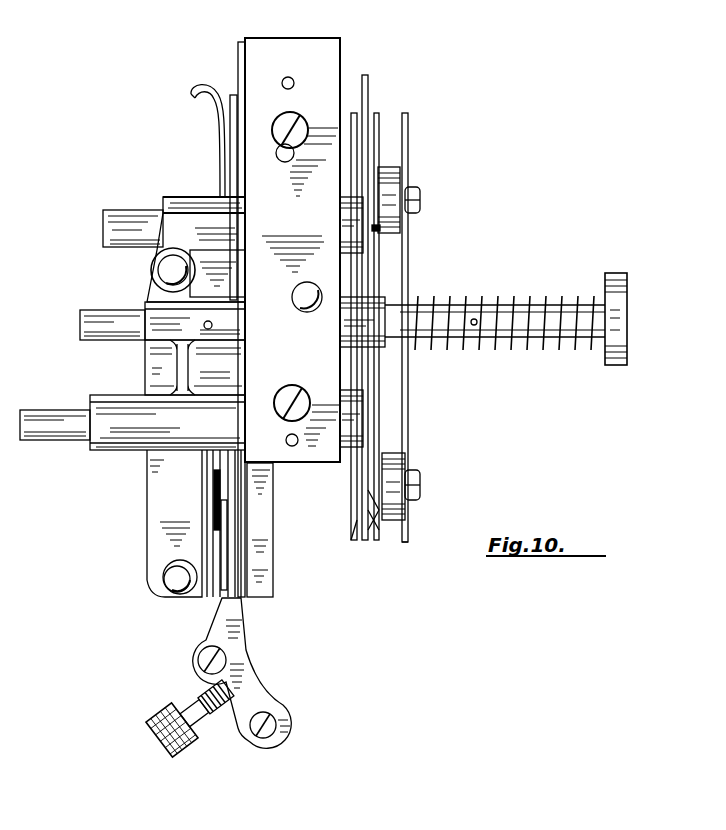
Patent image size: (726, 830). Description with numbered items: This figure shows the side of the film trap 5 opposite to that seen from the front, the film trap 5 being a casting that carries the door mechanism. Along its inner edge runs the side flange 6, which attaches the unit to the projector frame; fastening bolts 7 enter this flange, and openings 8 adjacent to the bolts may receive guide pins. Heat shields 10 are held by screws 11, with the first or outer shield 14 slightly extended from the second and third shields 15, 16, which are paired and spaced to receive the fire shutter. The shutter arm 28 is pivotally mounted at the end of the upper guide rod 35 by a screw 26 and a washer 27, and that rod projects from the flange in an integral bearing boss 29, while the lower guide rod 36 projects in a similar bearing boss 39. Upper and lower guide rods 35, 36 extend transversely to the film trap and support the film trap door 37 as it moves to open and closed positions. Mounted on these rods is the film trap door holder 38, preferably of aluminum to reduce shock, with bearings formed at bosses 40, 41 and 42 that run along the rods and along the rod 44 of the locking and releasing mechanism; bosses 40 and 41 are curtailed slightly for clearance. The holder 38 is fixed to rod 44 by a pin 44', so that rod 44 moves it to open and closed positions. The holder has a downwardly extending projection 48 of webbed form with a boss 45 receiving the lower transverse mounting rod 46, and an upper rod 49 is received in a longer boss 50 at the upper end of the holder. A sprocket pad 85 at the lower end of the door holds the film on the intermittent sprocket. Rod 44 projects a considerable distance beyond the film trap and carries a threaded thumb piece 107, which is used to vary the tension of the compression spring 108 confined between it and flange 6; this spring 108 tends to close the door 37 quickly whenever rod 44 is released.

The film trap 5 is at (250, 40).
The side flange 6 is at (322, 42).
The fastening bolts 7 is at (301, 126).
The openings 8 is at (296, 447).
The heat shields 10 is at (410, 147).
The screws 11 is at (420, 200).
The first or outer shield 14 is at (412, 533).
The second shield 15 is at (384, 544).
The third shield 16 is at (356, 540).
The screw 26 is at (382, 225).
The washer 27 is at (380, 240).
The shutter arm 28 is at (368, 100).
The bearing boss 29 is at (360, 250).
The upper guide rod 35 is at (108, 236).
The lower guide rod 36 is at (48, 440).
The film trap door 37 is at (218, 120).
The film trap door holder 38 is at (186, 196).
The bearing boss 39 is at (358, 422).
The boss 40 is at (165, 208).
The boss 41 is at (146, 304).
The boss 42 is at (126, 396).
The rod 44 is at (320, 303).
The pin 44' is at (191, 323).
The boss 45 is at (163, 582).
The lower transverse mounting rod 46 is at (183, 586).
The downwardly extending projection 48 is at (162, 497).
The upper rod 49 is at (160, 268).
The boss 50 is at (182, 250).
The sprocket pad 85 is at (204, 641).
The thumb piece 107 is at (627, 284).
The compression spring 108 is at (558, 298).